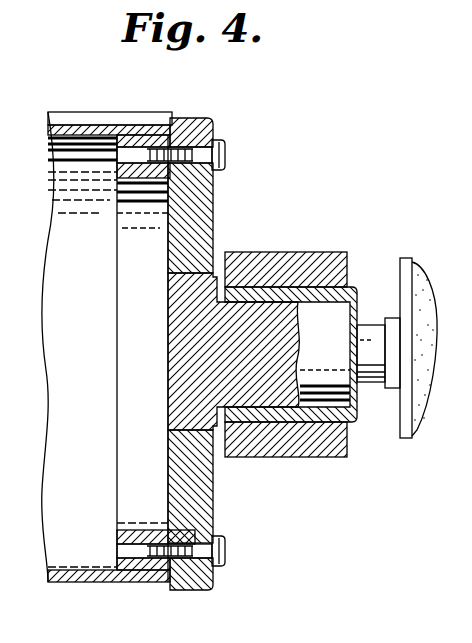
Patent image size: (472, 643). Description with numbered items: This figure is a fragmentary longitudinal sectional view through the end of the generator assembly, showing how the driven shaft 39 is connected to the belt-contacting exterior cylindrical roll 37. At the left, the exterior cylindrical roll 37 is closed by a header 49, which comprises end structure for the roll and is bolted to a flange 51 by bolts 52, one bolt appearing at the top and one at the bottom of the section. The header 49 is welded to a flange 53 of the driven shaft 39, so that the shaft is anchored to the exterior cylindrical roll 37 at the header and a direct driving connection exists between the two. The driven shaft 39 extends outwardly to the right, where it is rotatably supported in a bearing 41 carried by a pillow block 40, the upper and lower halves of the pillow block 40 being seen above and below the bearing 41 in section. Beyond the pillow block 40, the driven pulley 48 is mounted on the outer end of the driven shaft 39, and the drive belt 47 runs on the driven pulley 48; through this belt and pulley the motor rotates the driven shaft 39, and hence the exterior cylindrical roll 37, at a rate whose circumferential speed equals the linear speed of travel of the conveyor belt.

The exterior cylindrical roll 37 is at (73, 128).
The driven shaft 39 is at (366, 335).
The pillow block 40 is at (285, 438).
The bearing 41 is at (245, 293).
The drive belt 47 is at (422, 412).
The driven pulley 48 is at (403, 278).
The header 49 is at (180, 245).
The flange 51 is at (192, 128).
The bolts 52 is at (226, 148).
The flange of the driven shaft 53 is at (210, 382).